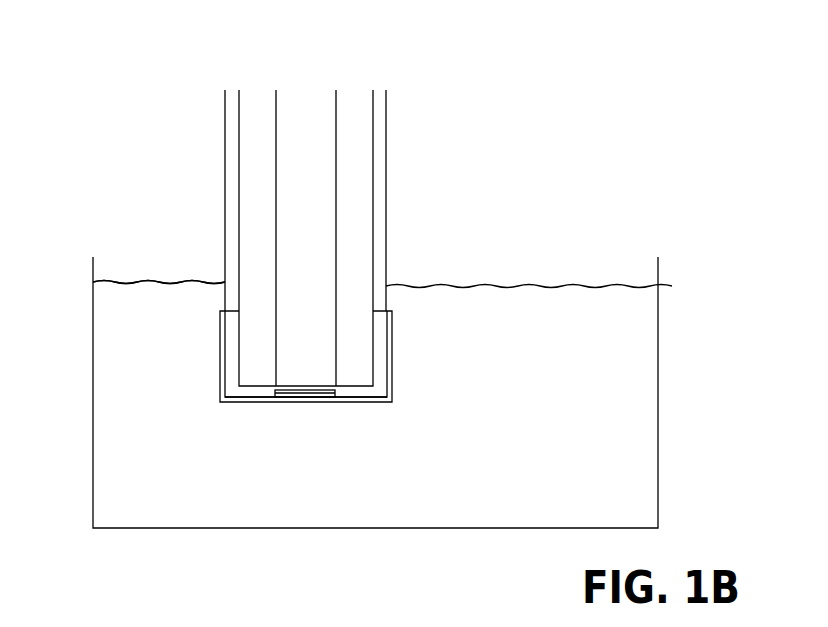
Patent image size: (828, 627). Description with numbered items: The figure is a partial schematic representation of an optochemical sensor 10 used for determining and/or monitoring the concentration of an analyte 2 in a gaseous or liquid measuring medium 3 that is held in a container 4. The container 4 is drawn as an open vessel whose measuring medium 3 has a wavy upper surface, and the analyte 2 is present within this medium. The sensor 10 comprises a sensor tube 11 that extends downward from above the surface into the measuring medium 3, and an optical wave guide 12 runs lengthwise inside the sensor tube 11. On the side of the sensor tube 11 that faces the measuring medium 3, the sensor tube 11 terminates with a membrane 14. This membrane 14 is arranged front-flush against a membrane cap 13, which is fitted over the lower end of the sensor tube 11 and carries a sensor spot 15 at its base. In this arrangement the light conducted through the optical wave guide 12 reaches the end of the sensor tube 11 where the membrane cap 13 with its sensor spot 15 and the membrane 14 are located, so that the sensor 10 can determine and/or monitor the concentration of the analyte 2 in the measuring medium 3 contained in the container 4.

The optochemical sensor 10 is at (122, 78).
The analyte 2 is at (115, 423).
The measuring medium 3 is at (115, 345).
The container 4 is at (84, 299).
The sensor tube 11 is at (210, 226).
The optical wave guide 12 is at (295, 157).
The membrane cap 13 is at (408, 356).
The membrane 14 is at (260, 402).
The sensor spot 15 is at (329, 398).